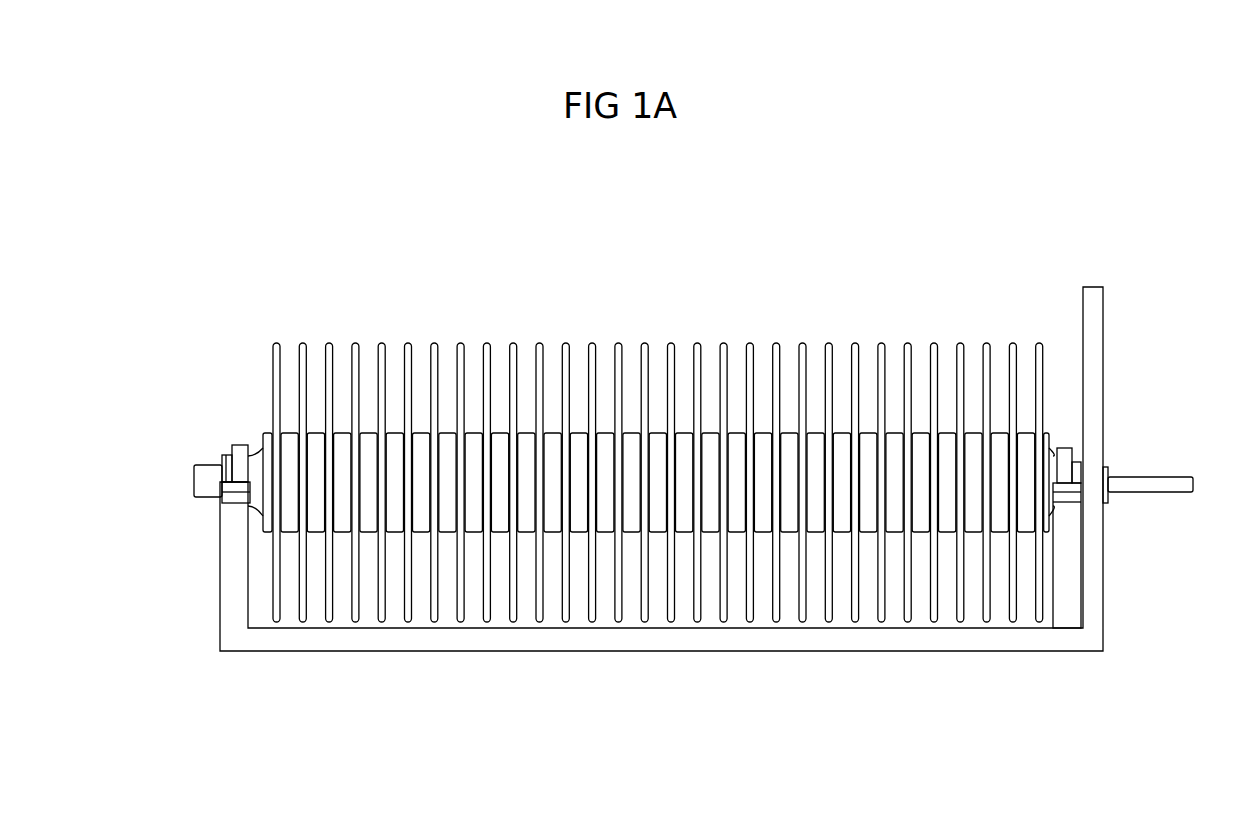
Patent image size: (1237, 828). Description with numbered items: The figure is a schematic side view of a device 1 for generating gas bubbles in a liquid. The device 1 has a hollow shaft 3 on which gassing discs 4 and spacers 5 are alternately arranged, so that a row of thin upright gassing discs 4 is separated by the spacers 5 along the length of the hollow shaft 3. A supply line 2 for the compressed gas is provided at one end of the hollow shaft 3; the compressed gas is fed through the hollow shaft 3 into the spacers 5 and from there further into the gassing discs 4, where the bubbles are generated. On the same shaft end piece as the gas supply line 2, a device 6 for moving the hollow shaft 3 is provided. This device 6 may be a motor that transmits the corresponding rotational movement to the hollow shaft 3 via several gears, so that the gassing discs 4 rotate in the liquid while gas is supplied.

The device 1 is at (352, 258).
The supply line 2 is at (1175, 480).
The hollow shaft 3 is at (258, 498).
The gassing discs 4 is at (564, 343).
The spacers 5 is at (708, 440).
The device for moving the hollow shaft 6 is at (1115, 500).